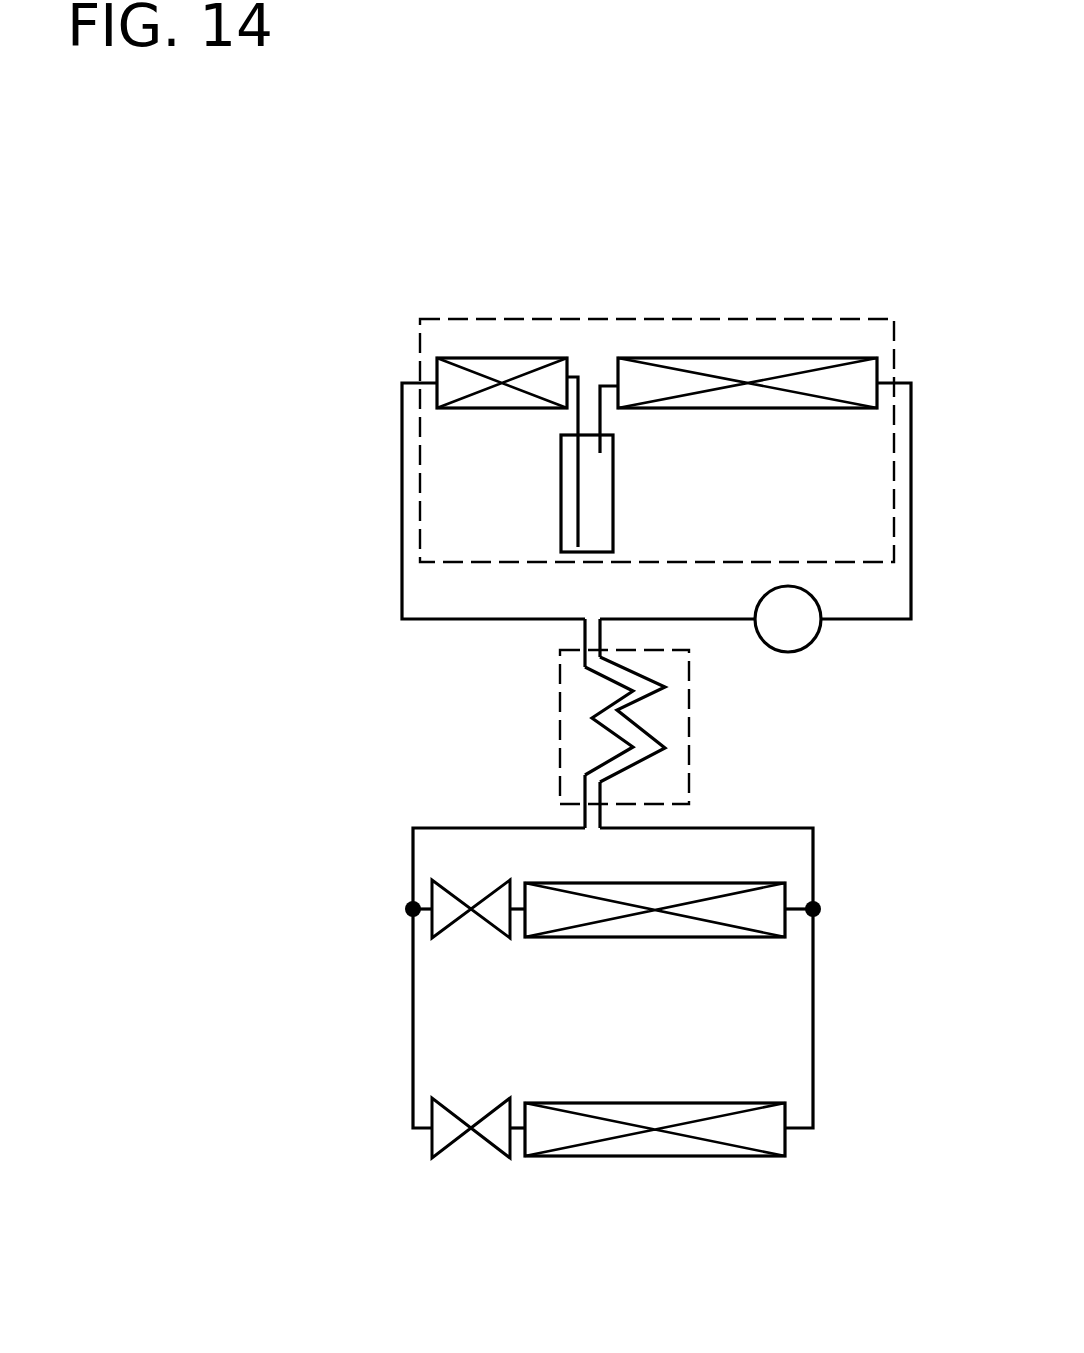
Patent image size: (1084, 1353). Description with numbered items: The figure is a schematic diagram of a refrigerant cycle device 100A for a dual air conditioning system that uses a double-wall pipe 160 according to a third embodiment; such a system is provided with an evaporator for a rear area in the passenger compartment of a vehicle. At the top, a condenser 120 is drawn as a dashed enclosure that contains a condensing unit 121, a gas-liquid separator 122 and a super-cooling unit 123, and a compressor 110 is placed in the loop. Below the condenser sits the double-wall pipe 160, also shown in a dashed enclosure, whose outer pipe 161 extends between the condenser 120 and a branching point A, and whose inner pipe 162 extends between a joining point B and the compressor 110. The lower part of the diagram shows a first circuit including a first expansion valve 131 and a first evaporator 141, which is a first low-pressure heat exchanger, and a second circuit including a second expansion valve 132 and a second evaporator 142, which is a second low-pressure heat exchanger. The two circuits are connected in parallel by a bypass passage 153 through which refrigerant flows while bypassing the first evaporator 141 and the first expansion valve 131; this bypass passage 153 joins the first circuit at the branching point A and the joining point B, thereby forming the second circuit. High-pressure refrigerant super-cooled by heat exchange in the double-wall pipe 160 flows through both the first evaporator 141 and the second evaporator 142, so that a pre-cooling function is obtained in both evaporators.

The refrigerant cycle device 100A is at (399, 430).
The compressor 110 is at (818, 637).
The condenser 120 is at (482, 318).
The condensing unit 121 is at (698, 357).
The gas-liquid separator 122 is at (592, 442).
The super-cooling unit 123 is at (517, 357).
The first expansion valve 131 is at (457, 923).
The second expansion valve 132 is at (458, 1142).
The first evaporator 141 is at (638, 937).
The second evaporator 142 is at (640, 1157).
The bypass passage 153 is at (413, 1073).
The double-wall pipe 160 is at (560, 673).
The outer pipe 161 is at (600, 706).
The inner pipe 162 is at (640, 710).
The branching point A is at (405, 909).
The joining point B is at (823, 910).